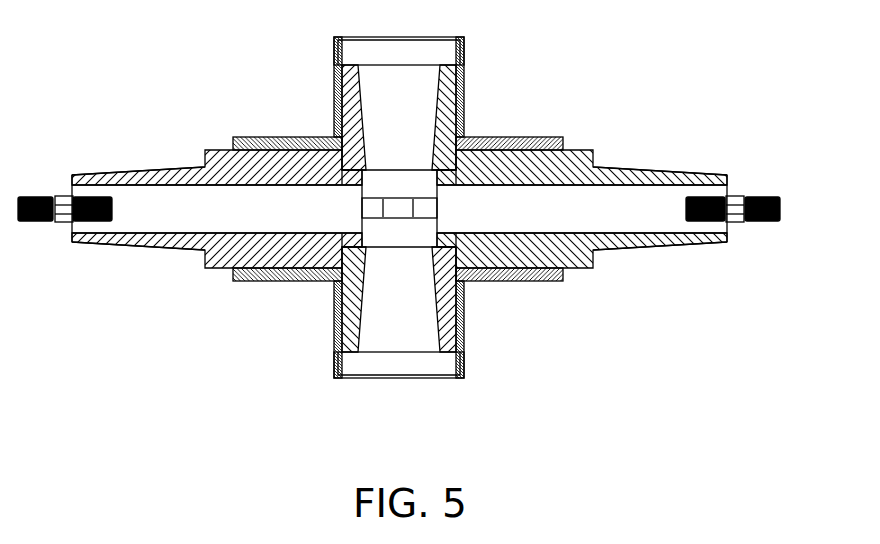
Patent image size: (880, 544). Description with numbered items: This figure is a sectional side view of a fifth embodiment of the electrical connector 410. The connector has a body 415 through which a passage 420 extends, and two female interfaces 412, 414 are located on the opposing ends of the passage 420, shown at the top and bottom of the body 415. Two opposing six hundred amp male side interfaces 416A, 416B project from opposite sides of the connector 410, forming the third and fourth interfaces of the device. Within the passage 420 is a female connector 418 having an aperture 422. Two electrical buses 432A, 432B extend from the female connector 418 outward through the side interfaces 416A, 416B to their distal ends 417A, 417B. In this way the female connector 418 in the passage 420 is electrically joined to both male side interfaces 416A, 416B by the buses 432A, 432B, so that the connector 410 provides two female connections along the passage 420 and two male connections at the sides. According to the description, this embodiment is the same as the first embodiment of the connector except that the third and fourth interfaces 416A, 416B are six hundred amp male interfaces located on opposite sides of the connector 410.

The electrical connector 410 is at (287, 56).
The female interface 412 is at (433, 37).
The female interface 414 is at (367, 380).
The body 415 is at (464, 326).
The 600 amp male side interface 416A is at (100, 171).
The 600 amp male side interface 416B is at (677, 170).
The distal end of side interface 417A is at (72, 229).
The distal end of side interface 417B is at (728, 230).
The female connector 418 is at (375, 210).
The passage 420 is at (402, 307).
The aperture 422 is at (406, 200).
The electrical bus 432A is at (197, 208).
The electrical bus 432B is at (610, 217).